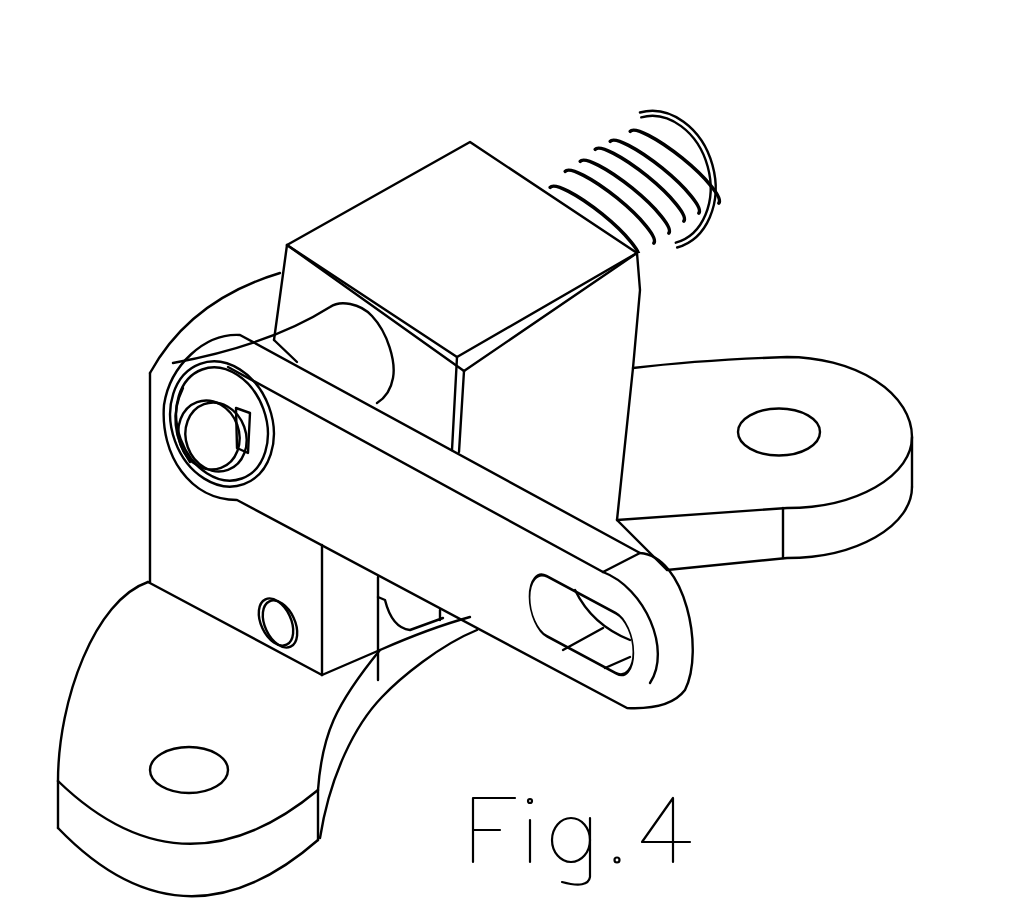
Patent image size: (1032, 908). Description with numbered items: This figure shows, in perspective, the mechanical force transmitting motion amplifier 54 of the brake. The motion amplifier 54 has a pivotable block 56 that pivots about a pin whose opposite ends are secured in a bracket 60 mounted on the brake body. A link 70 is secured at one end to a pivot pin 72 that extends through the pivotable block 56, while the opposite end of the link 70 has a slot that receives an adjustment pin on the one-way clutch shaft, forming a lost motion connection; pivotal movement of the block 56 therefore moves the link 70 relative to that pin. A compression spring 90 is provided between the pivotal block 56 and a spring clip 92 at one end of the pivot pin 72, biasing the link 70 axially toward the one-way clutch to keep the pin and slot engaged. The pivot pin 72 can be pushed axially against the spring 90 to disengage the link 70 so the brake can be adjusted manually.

The mechanical force transmitting motion amplifier 54 is at (222, 126).
The pivotable block 56 is at (497, 262).
The bracket 60 is at (258, 578).
The link 70 is at (420, 534).
The pivot pin 72 is at (380, 373).
The compression spring 90 is at (626, 139).
The spring clip 92 is at (712, 196).